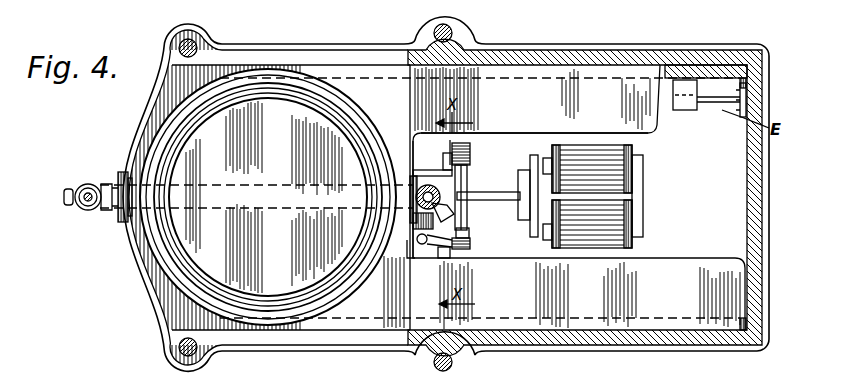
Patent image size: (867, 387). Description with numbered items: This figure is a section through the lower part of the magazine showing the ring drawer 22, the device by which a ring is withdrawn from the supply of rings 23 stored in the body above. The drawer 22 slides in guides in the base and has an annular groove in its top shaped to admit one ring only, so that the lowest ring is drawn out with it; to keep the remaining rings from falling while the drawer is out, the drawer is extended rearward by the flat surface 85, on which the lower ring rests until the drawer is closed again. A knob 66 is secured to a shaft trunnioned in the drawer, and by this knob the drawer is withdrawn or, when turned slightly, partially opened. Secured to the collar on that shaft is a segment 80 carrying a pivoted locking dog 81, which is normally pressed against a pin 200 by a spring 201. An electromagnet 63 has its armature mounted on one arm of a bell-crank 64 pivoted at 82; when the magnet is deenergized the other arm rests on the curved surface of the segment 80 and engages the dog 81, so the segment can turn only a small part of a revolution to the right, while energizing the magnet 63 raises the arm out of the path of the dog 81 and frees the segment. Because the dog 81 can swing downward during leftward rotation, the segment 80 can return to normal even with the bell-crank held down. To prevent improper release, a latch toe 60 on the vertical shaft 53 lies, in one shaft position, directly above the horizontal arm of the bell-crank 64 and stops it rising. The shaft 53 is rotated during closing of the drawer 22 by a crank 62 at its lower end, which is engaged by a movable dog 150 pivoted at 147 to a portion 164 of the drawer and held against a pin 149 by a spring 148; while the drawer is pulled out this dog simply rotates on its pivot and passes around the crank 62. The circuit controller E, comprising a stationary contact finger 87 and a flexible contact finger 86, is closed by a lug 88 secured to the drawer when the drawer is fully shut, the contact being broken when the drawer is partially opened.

The drawer 22 is at (156, 293).
The rings 23 is at (291, 98).
The vertical shaft 53 is at (410, 178).
The latch toe 60 is at (470, 192).
The crank 62 is at (440, 186).
The electromagnet 63 is at (644, 191).
The bell-crank 64 is at (494, 196).
The knob 66 is at (81, 188).
The segment 80 is at (455, 248).
The locking dog 81 is at (462, 145).
The pivot 82 is at (523, 165).
The flat surface 85 is at (491, 197).
The flexible contact finger 86 is at (698, 104).
The stationary contact finger 87 is at (738, 68).
The lug 88 is at (690, 88).
The pivot 147 is at (412, 250).
The spring 148 is at (447, 255).
The pin 149 is at (457, 217).
The movable dog 150 is at (466, 236).
The portion of the drawer 164 is at (407, 250).
The pin 200 is at (452, 142).
The spring 201 is at (470, 160).